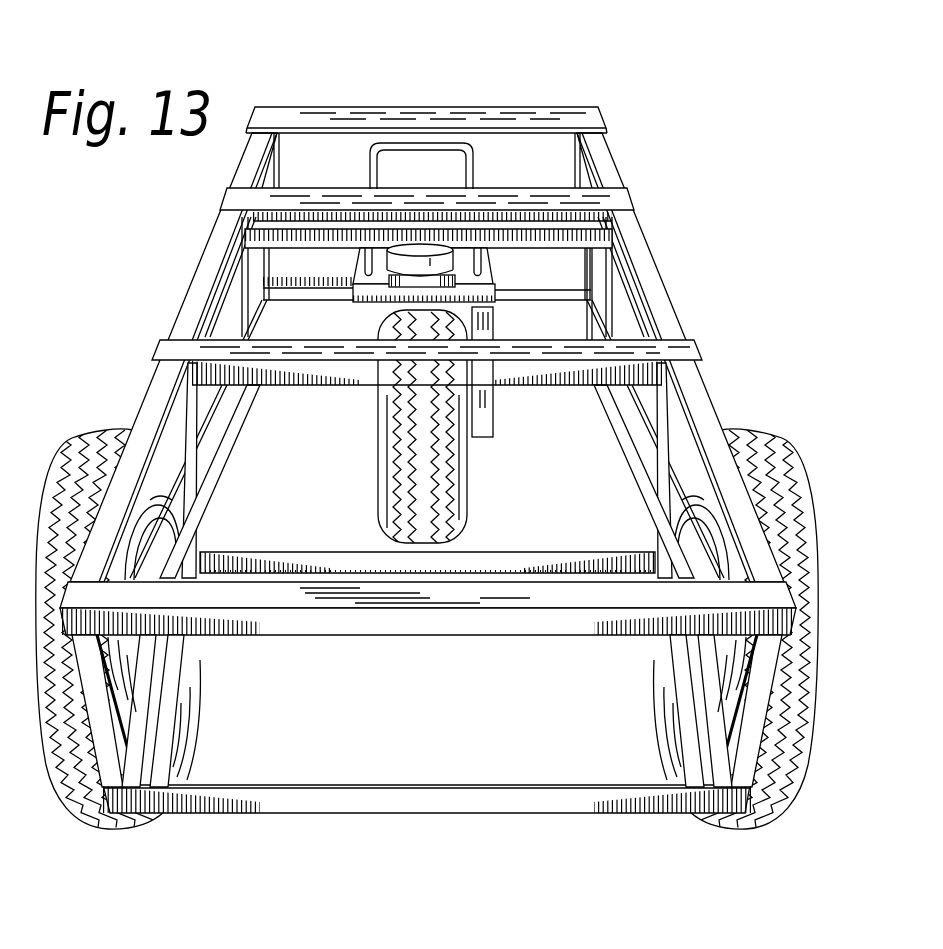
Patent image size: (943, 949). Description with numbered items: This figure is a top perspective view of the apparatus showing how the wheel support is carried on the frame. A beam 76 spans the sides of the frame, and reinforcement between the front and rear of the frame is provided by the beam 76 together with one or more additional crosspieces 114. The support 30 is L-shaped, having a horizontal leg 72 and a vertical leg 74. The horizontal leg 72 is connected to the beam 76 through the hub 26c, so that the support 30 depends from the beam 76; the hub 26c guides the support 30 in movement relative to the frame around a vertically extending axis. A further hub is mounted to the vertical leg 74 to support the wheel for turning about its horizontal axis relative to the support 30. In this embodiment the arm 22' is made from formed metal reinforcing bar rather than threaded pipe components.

The hub 26c is at (417, 247).
The arm 22' is at (421, 109).
The support 30 is at (467, 257).
The beam 76 is at (346, 192).
The horizontal leg 72 is at (492, 264).
The crosspiece 114 is at (344, 352).
The vertical leg 74 is at (484, 412).